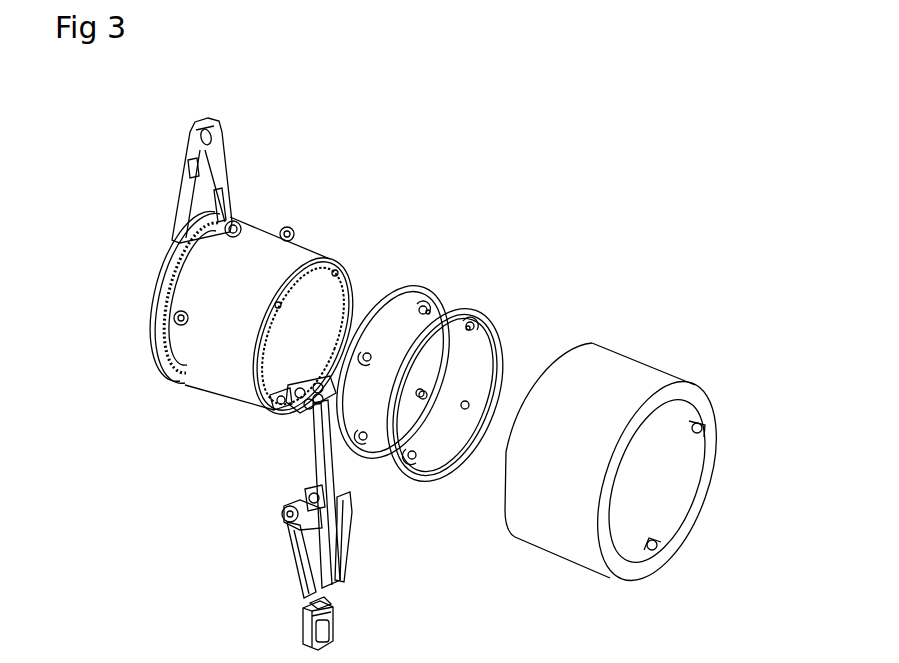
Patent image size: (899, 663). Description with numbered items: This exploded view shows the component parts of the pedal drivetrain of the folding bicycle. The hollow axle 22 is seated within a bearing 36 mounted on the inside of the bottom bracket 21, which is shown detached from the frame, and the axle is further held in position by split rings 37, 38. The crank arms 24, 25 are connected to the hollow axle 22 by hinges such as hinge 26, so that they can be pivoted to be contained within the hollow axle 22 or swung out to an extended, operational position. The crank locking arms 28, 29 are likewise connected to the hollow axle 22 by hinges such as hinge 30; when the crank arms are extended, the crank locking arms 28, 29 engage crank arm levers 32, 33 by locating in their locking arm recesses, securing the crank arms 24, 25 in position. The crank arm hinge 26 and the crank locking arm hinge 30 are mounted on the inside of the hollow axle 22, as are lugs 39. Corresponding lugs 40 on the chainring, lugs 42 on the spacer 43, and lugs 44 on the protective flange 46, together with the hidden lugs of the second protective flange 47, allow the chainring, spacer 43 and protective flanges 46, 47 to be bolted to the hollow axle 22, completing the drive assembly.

The bottom bracket 21 is at (628, 373).
The hollow axle 22 is at (222, 390).
The crank arm 24 is at (342, 527).
The crank arm 25 is at (183, 225).
The hinge 26 is at (292, 386).
The crank locking arm 28 is at (190, 168).
The crank locking arm 29 is at (315, 471).
The hinge 30 is at (283, 382).
The crank arm lever 32 is at (333, 627).
The crank arm lever 33 is at (197, 127).
The bearing 36 is at (184, 312).
The split ring 37 is at (330, 258).
The split ring 38 is at (156, 350).
The lugs 39 is at (175, 378).
The lugs 40 is at (430, 310).
The lugs 42 is at (368, 362).
The spacer 43 is at (425, 297).
The lugs 44 is at (470, 331).
The protective flange 46 is at (487, 317).
The protective flange 47 is at (172, 262).